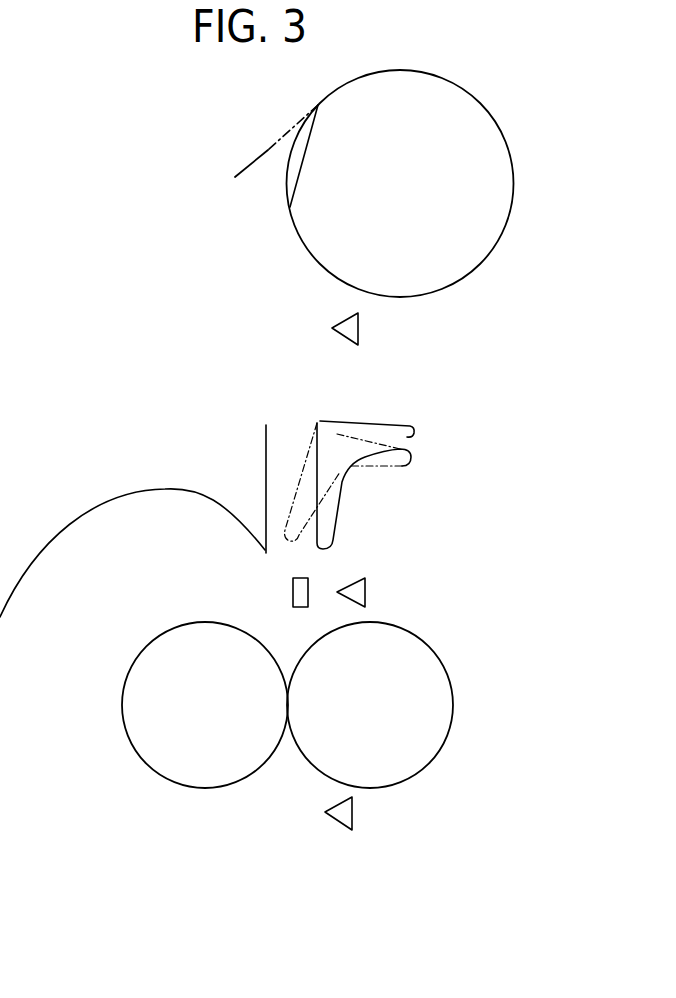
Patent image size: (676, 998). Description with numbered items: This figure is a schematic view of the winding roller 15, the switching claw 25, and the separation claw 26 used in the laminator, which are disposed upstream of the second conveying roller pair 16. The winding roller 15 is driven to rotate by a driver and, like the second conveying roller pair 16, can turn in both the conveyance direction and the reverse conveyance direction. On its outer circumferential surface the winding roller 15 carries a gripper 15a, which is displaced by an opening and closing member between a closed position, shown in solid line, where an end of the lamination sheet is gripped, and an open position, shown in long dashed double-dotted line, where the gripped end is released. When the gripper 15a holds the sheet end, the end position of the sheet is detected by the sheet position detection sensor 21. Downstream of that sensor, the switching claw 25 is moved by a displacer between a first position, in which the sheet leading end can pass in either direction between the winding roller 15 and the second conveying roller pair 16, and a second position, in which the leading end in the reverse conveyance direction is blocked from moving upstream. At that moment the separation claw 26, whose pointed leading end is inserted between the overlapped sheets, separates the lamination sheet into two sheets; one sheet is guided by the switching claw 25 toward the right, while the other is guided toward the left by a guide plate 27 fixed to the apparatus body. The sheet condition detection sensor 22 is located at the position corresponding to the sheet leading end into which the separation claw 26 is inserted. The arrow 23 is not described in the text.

The winding roller 15 is at (468, 268).
The gripper 15a is at (300, 170).
The sheet position detection sensor 21 is at (360, 327).
The guide plate 27 is at (158, 488).
The switching claw 25 is at (307, 523).
The separation claw 26 is at (292, 592).
The sheet condition detection sensor 22 is at (366, 590).
The second conveying roller pair 16 is at (462, 706).
The arrow (direction) 23 is at (353, 810).